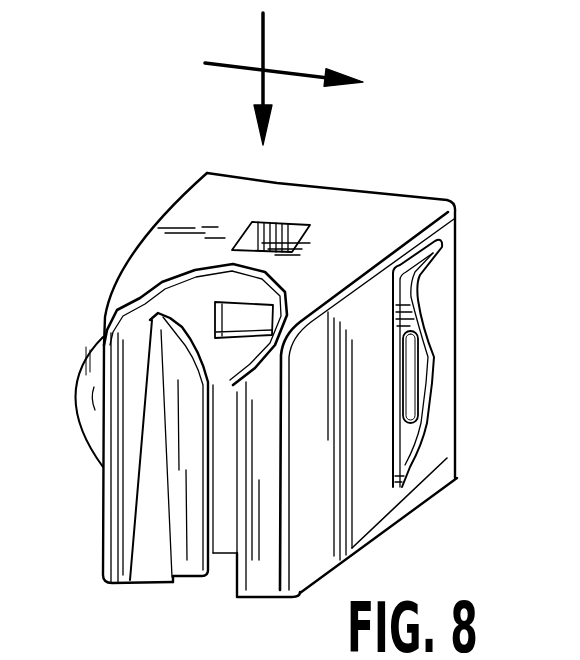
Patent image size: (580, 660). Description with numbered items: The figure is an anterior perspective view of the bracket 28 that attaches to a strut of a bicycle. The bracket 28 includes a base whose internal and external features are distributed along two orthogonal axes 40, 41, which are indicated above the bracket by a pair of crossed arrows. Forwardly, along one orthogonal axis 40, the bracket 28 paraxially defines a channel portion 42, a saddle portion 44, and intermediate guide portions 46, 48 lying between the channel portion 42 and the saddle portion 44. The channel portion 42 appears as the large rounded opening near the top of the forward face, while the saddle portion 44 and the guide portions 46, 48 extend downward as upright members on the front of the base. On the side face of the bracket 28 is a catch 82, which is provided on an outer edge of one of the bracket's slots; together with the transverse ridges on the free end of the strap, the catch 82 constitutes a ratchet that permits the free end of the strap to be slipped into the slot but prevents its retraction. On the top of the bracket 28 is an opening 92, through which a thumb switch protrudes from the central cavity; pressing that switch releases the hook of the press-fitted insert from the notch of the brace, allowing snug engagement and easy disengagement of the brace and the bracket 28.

The bracket 28 is at (470, 318).
The orthogonal axis 40 is at (263, 87).
The orthogonal axis 41 is at (292, 70).
The channel portion 42 is at (183, 305).
The saddle portion 44 is at (128, 452).
The intermediate guide portion 46 is at (155, 563).
The intermediate guide portion 48 is at (250, 575).
The catch 82 is at (393, 455).
The opening 92 is at (282, 238).